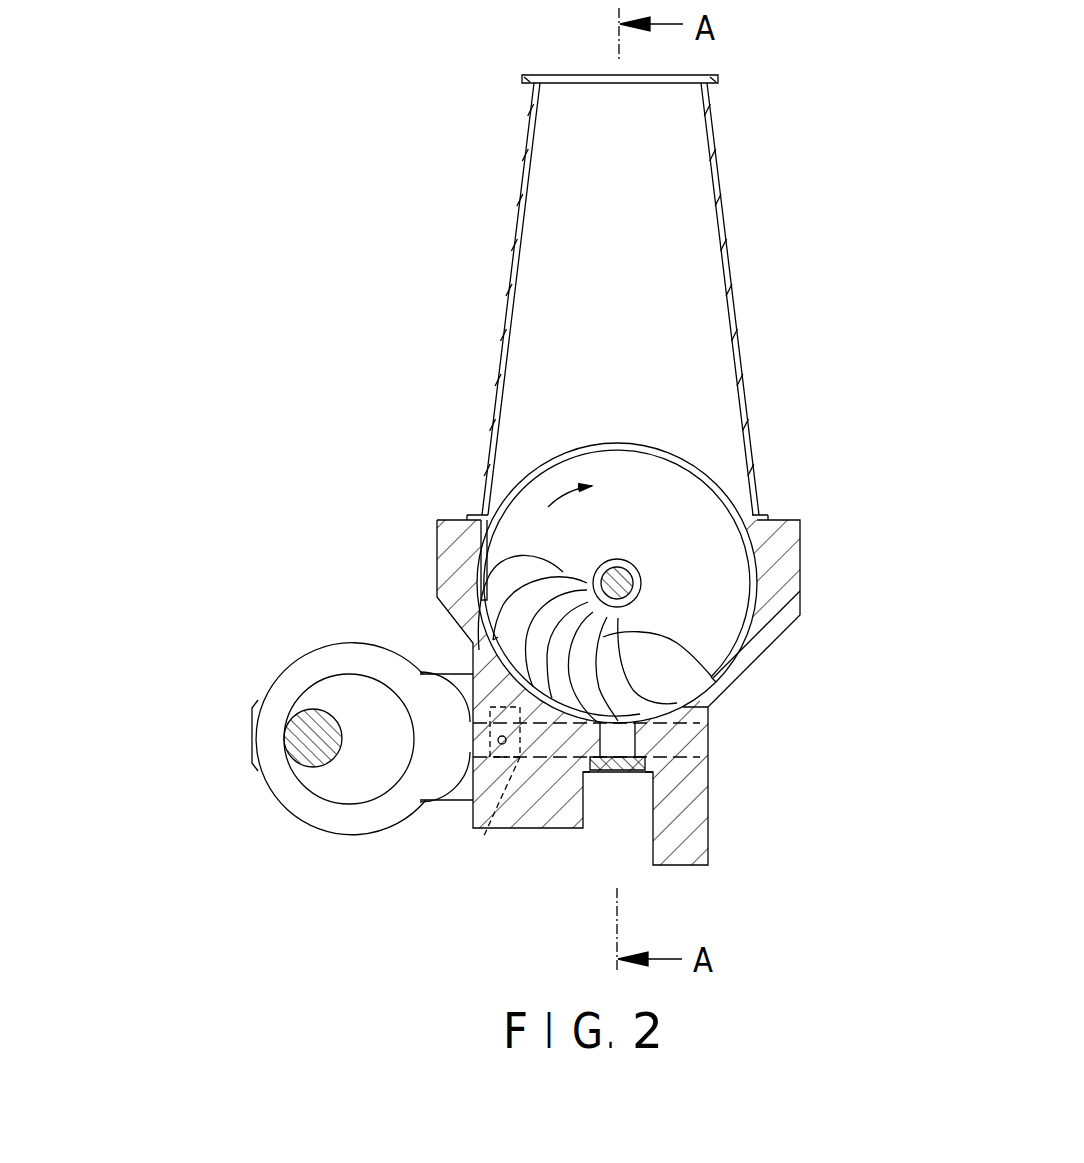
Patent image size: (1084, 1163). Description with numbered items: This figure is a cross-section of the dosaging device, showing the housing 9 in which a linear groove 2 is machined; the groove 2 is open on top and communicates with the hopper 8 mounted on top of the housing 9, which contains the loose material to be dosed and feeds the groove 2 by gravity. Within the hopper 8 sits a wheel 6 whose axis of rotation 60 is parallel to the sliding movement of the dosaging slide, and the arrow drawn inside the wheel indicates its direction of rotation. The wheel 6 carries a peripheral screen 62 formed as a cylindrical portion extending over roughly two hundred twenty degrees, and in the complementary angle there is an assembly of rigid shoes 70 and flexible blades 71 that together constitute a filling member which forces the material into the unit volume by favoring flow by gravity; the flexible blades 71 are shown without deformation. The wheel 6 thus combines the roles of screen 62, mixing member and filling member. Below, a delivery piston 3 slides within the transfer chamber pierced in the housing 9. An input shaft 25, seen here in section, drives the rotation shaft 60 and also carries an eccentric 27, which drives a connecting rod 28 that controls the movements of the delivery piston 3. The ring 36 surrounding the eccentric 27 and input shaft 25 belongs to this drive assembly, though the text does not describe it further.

The linear groove 2 is at (625, 748).
The delivery piston 3 is at (483, 838).
The wheel 6 is at (641, 536).
The hopper 8 is at (692, 243).
The housing 9 is at (536, 815).
The input shaft 25 is at (305, 754).
The eccentric 27 is at (345, 690).
The connecting rod 28 is at (297, 668).
The mounting ring 36 is at (355, 823).
The axis of rotation 60 is at (636, 568).
The peripheral screen 62 is at (645, 443).
The rigid shoes 70 is at (510, 634).
The flexible blades 71 is at (523, 672).